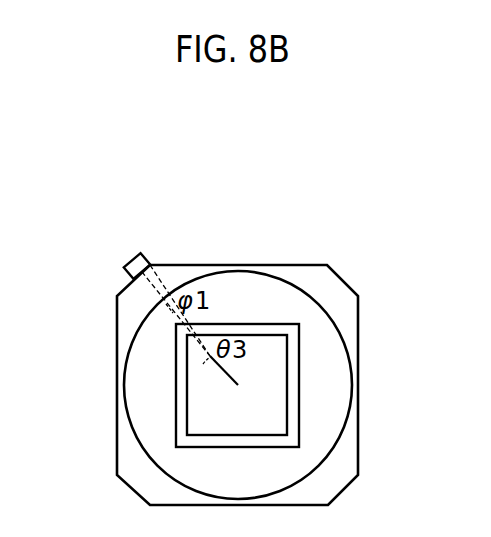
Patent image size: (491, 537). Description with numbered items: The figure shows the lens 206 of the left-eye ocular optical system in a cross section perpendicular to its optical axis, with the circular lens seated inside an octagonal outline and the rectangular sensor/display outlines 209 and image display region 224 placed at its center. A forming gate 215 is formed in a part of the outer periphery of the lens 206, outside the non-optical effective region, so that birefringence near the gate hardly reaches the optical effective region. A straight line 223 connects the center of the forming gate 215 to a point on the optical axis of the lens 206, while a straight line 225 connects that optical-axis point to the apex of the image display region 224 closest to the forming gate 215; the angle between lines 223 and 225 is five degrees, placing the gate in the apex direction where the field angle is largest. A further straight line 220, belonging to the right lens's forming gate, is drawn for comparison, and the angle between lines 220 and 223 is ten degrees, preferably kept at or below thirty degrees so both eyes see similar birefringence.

The lens 206 is at (117, 435).
The image sensor 209 is at (278, 325).
The forming gate 215 is at (122, 266).
The straight line 220 is at (148, 282).
The straight line 223 is at (152, 270).
The image display region 224 is at (287, 370).
The straight line 225 is at (210, 356).